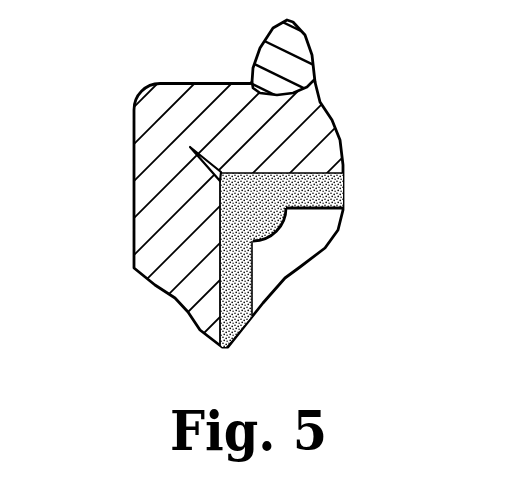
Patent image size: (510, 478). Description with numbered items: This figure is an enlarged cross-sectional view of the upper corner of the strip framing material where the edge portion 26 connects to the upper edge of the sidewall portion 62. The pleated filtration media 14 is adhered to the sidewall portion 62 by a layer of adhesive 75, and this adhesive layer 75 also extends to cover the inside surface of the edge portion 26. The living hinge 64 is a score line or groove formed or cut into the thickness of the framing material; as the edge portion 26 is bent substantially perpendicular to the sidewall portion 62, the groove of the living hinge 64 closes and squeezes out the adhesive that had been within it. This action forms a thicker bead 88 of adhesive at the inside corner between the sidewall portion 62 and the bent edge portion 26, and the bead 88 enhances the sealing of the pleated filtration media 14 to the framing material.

The pleated filtration media 14 is at (320, 232).
The edge portion 26 is at (333, 152).
The sidewall portion 62 is at (147, 236).
The living hinge 64 is at (188, 162).
The adhesive layer 75 is at (240, 302).
The bead of adhesive 88 is at (277, 227).